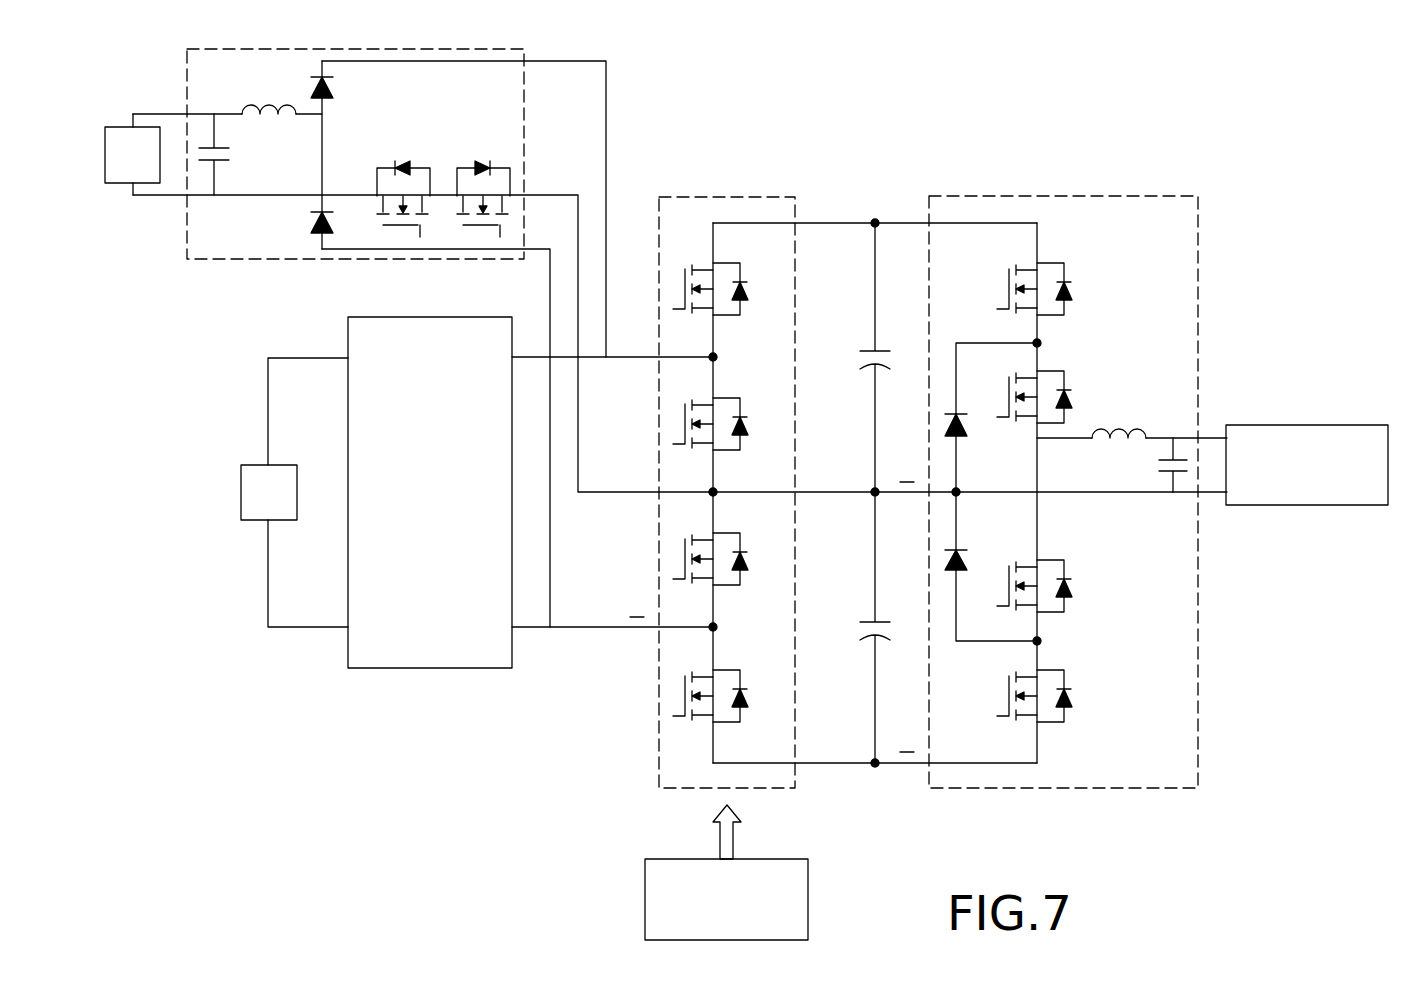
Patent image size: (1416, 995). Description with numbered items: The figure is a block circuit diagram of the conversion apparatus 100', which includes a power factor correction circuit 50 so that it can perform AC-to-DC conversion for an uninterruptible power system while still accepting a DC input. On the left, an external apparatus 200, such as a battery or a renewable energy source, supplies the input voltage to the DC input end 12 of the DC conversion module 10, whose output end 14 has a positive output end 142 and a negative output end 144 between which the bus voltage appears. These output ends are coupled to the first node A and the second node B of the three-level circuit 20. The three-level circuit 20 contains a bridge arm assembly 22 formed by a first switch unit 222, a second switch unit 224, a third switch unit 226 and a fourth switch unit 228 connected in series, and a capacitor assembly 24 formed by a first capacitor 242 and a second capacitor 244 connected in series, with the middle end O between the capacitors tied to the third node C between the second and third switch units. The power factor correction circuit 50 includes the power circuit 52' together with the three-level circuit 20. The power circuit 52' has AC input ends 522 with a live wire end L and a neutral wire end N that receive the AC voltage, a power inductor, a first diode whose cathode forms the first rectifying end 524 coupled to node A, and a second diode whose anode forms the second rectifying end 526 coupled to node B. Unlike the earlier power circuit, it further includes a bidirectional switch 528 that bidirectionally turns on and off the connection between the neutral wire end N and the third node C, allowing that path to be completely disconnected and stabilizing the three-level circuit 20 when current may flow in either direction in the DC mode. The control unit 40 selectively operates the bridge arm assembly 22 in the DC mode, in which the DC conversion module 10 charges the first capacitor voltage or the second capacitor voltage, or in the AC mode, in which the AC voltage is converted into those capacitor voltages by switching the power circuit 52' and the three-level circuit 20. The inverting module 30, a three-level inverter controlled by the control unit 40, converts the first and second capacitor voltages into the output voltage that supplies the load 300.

The conversion apparatus 100' is at (721, 37).
The power factor correction circuit 50 is at (163, 60).
The power circuit 52' is at (316, 163).
The AC input ends 522 is at (117, 141).
The first rectifying end 524 is at (554, 61).
The second rectifying end 526 is at (537, 252).
The bidirectional switch 528 is at (445, 155).
The DC conversion module 10 is at (428, 322).
The DC input end 12 is at (306, 357).
The external apparatus 200 is at (257, 466).
The output end 14 is at (621, 270).
The positive output end 142 is at (645, 356).
The negative output end 144 is at (645, 630).
The three-level circuit 20 is at (716, 176).
The bridge arm assembly 22 is at (728, 202).
The first switch unit 222 is at (748, 287).
The second switch unit 224 is at (748, 420).
The third switch unit 226 is at (748, 556).
The fourth switch unit 228 is at (748, 691).
The capacitor assembly 24 is at (877, 212).
The first capacitor 242 is at (860, 358).
The second capacitor 244 is at (860, 627).
The inverting module 30 is at (1077, 199).
The load 300 is at (1307, 430).
The control unit 40 is at (753, 865).